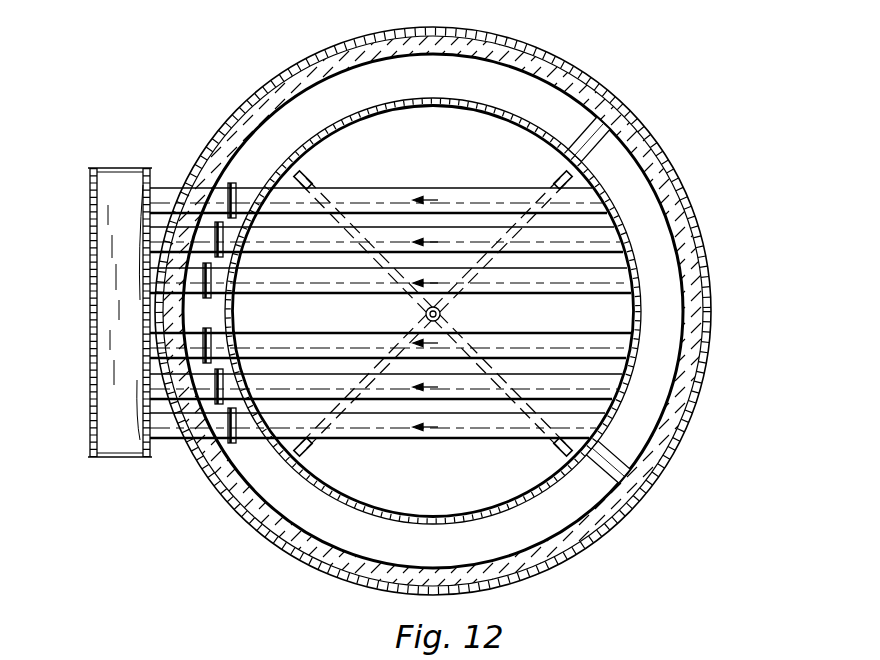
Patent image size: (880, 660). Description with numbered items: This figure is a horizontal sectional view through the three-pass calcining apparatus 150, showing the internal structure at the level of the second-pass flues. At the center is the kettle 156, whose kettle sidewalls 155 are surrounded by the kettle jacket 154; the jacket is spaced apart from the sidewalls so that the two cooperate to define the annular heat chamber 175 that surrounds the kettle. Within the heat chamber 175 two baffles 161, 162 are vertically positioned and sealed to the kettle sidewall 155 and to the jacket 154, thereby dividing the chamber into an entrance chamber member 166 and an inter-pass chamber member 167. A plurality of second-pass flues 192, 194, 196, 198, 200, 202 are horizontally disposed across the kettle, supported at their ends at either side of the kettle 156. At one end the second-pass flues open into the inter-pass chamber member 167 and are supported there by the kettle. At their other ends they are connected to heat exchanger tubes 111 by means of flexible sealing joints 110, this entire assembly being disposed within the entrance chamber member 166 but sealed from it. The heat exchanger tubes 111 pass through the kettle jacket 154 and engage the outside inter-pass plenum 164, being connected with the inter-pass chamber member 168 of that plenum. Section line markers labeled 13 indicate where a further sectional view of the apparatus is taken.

The section line 13- 13 is at (68, 310).
The flexible sealing joints 110 is at (207, 262).
The heat exchanger tubes 111 is at (163, 205).
The three-pass calcining apparatus 150 is at (698, 57).
The kettle jacket 154 is at (667, 465).
The kettle sidewalls 155 is at (640, 363).
The kettle 156 is at (464, 132).
The baffle 161 is at (606, 151).
The baffle 162 is at (633, 477).
The outside inter-pass plenum 164 is at (87, 240).
The entrance chamber member 166 is at (290, 495).
The inter-pass chamber member 167 is at (653, 217).
The inter-pass chamber member 168 is at (107, 347).
The annular heat chamber 175 is at (331, 525).
The second-pass flue 192 is at (392, 197).
The second-pass flue 194 is at (473, 240).
The second-pass flue 196 is at (338, 282).
The second-pass flue 198 is at (510, 350).
The second-pass flue 200 is at (390, 387).
The second-pass flue 202 is at (483, 425).